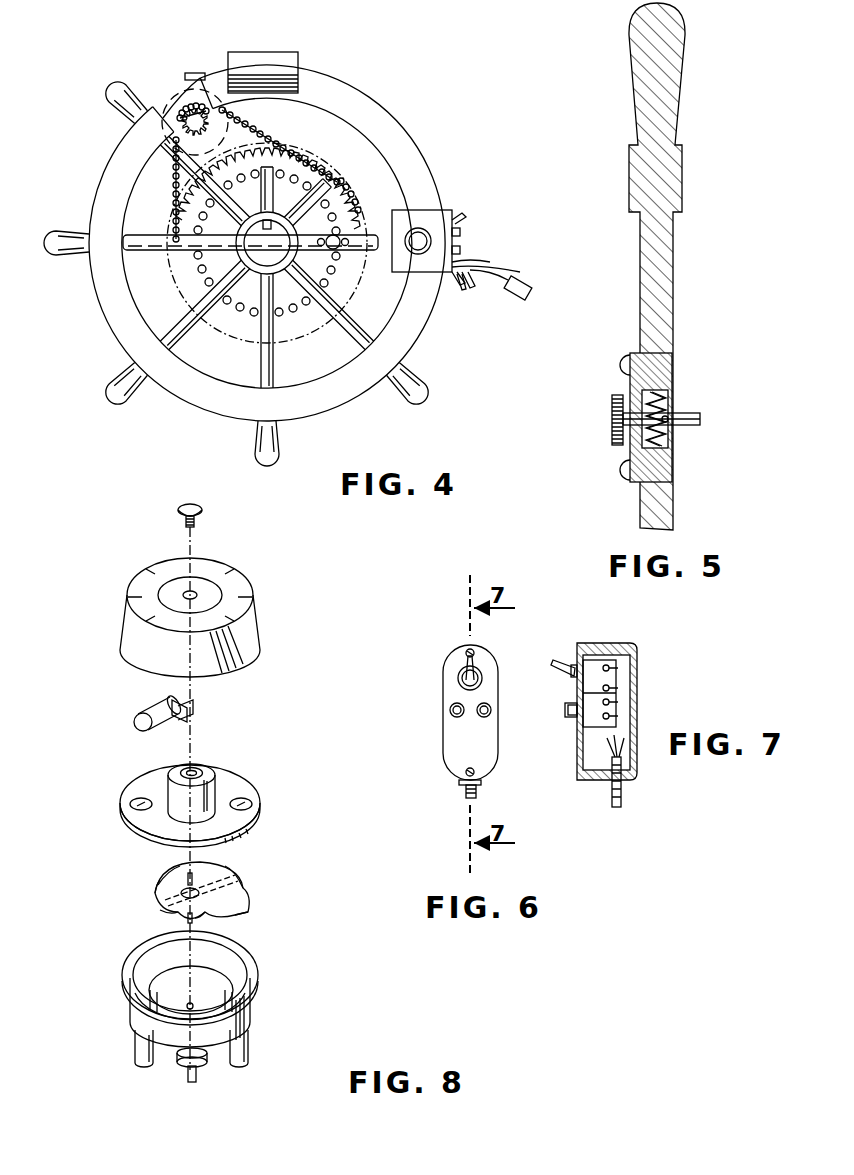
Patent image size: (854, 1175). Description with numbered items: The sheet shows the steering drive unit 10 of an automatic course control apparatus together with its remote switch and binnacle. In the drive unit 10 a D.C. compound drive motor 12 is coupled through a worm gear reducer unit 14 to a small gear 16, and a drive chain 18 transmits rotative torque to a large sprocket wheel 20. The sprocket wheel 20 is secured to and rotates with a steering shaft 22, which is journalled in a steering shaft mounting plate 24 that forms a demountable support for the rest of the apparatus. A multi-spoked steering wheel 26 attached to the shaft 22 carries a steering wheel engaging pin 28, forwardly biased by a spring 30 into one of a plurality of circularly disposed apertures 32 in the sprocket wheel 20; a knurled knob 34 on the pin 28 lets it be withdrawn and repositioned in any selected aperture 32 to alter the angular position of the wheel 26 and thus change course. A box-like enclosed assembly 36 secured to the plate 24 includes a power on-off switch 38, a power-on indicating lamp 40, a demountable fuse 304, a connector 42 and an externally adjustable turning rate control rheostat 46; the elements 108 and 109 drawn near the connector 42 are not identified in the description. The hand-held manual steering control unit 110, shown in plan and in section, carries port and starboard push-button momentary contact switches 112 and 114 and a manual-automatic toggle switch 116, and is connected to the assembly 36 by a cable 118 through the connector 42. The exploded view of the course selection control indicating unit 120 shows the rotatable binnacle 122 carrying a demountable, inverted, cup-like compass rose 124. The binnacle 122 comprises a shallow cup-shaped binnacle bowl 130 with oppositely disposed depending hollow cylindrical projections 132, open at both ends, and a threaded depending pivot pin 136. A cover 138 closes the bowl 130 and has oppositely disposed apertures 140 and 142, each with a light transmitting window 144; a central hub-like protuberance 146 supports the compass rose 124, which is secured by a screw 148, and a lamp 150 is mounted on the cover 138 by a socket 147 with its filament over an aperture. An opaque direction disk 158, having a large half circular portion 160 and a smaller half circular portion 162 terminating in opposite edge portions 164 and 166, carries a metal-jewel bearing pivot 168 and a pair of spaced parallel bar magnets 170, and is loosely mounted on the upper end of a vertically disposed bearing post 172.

In FIG. 4, the steering drive unit 10 is at (392, 101).
In FIG. 4, the drive motor 12 is at (280, 52).
In FIG. 4, the worm gear reducer unit 14 is at (172, 100).
In FIG. 4, the small gear 16 is at (200, 121).
In FIG. 4, the drive chain 18 is at (250, 124).
In FIG. 4, the large sprocket wheel 20 is at (310, 152).
In FIG. 4, the steering shaft 22 is at (253, 245).
In FIG. 4, the steering shaft mounting plate 24 is at (417, 148).
In FIG. 4, the multi-spoked steering wheel 26 is at (105, 313).
In FIG. 5, the multi-spoked steering wheel 26 is at (672, 300).
In FIG. 5, the steering wheel engaging pin 28 is at (690, 413).
In FIG. 5, the spring 30 is at (665, 433).
In FIG. 4, the apertures 32 is at (336, 214).
In FIG. 4, the knurled knob 34 is at (336, 249).
In FIG. 5, the knurled knob 34 is at (614, 424).
In FIG. 4, the box-like enclosed assembly 36 is at (445, 284).
In FIG. 4, the power on-off switch 38 is at (465, 215).
In FIG. 4, the power on indicating lamp 40 is at (462, 250).
In FIG. 4, the connector 42 is at (462, 262).
In FIG. 4, the turning rate control rheostat 46 is at (428, 236).
In FIG. 4, the connector 108 is at (463, 292).
In FIG. 4, the wire 109 is at (503, 266).
In FIG. 4, the manual steering control unit 110 is at (530, 285).
In FIG. 6, the manual steering control unit 110 is at (456, 641).
In FIG. 7, the manual steering control unit 110 is at (646, 685).
In FIG. 6, the port push-button switch 112 is at (492, 710).
In FIG. 6, the starboard push-button switch 114 is at (449, 710).
In FIG. 7, the starboard push-button switch 114 is at (565, 716).
In FIG. 6, the manual-automatic toggle switch 116 is at (466, 660).
In FIG. 7, the manual-automatic toggle switch 116 is at (560, 664).
In FIG. 4, the cable 118 is at (472, 290).
In FIG. 6, the cable 118 is at (463, 792).
In FIG. 7, the cable 118 is at (622, 795).
In FIG. 8, the course selection control indicating unit 120 is at (265, 721).
In FIG. 8, the binnacle 122 is at (120, 973).
In FIG. 8, the compass rose 124 is at (125, 628).
In FIG. 8, the binnacle bowl 130 is at (248, 1016).
In FIG. 8, the hollow cylindrical projections 132 is at (135, 1047).
In FIG. 8, the pivot pin 136 is at (200, 1078).
In FIG. 8, the cover 138 is at (222, 766).
In FIG. 8, the aperture 140 is at (128, 813).
In FIG. 8, the aperture 142 is at (258, 810).
In FIG. 8, the light transmitting window 144 is at (133, 801).
In FIG. 8, the hub-like protuberance 146 is at (215, 793).
In FIG. 8, the socket 147 is at (162, 700).
In FIG. 8, the screw 148 is at (180, 506).
In FIG. 8, the lamp 150 is at (135, 723).
In FIG. 8, the direction disk 158 is at (257, 893).
In FIG. 8, the large half circular portion 160 is at (226, 866).
In FIG. 8, the smaller half circular portion 162 is at (155, 893).
In FIG. 8, the edge portion 164 is at (165, 880).
In FIG. 8, the edge portion 166 is at (232, 913).
In FIG. 8, the metal-jewel bearing pivot 168 is at (200, 887).
In FIG. 8, the bar magnets 170 is at (152, 906).
In FIG. 8, the bearing post 172 is at (200, 920).
In FIG. 4, the demountable fuse 304 is at (462, 232).